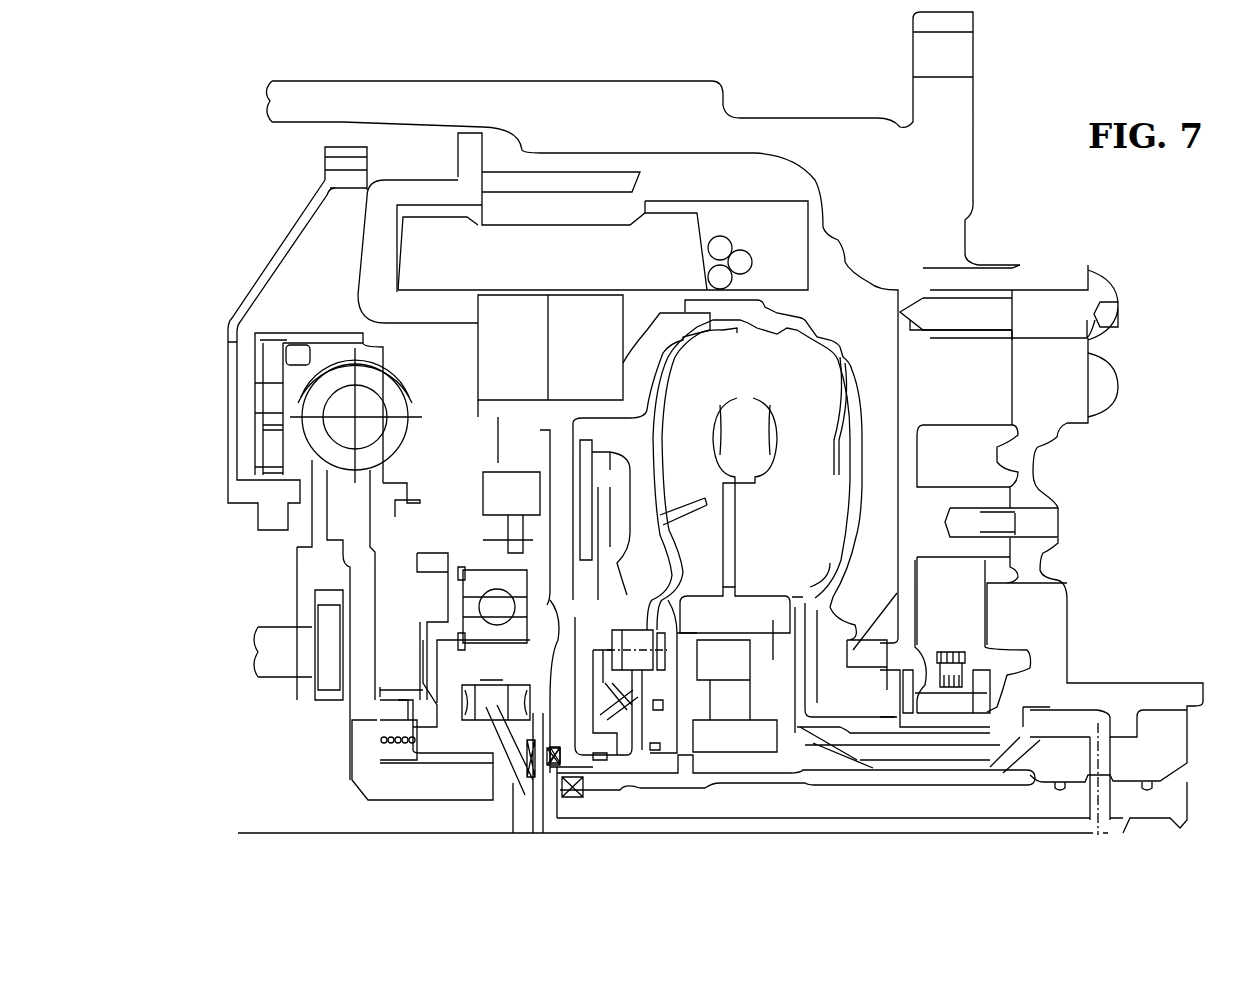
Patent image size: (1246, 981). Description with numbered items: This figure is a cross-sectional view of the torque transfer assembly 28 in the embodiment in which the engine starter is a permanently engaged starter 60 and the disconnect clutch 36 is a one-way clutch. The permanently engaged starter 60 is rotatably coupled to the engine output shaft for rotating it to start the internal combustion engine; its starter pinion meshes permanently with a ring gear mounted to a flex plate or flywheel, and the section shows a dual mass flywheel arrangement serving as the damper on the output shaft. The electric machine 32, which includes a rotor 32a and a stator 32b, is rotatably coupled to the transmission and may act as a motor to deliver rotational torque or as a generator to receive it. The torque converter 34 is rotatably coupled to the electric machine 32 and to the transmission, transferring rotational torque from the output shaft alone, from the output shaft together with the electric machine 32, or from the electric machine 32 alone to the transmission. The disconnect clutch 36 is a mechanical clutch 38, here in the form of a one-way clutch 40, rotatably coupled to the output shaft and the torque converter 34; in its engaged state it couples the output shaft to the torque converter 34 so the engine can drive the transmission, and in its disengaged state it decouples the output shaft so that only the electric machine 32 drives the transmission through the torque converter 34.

The permanently engaged starter 60 is at (210, 218).
The torque transfer assembly 28 is at (313, 430).
The electric machine 32 is at (583, 206).
The rotor 32a is at (518, 310).
The stator 32b is at (428, 248).
The torque converter 34 is at (817, 343).
The disconnect clutch 36 is at (359, 736).
The mechanical clutch 38 is at (359, 736).
The one-way clutch 40 is at (485, 698).